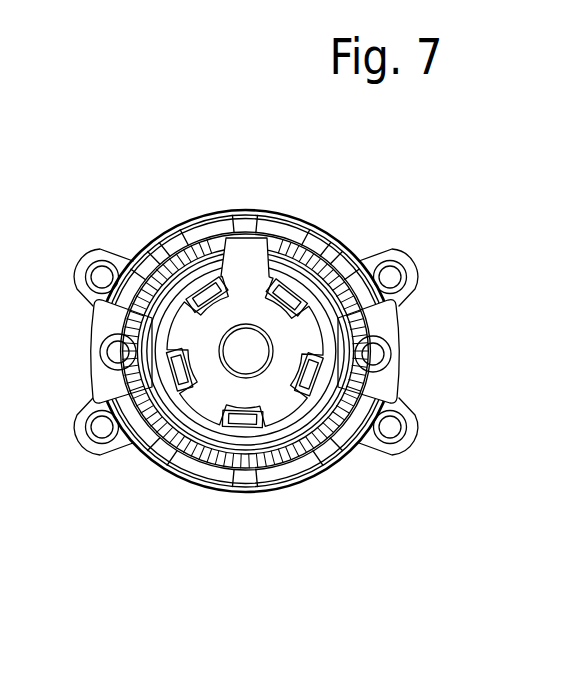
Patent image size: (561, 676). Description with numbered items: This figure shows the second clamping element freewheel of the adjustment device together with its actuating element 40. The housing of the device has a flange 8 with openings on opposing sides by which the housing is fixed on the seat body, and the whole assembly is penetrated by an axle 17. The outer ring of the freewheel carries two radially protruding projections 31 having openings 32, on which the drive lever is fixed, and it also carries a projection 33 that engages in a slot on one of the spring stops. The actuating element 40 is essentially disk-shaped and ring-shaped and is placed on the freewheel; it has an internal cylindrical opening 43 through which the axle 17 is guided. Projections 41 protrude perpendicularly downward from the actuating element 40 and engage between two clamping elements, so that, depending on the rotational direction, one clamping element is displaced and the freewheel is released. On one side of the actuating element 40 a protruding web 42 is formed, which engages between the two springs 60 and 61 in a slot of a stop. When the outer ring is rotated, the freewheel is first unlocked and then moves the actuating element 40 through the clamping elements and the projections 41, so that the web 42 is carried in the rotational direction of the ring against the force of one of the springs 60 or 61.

The flange 8 is at (416, 430).
The axle 17 is at (248, 355).
The projection 31 is at (387, 320).
The opening 32 is at (373, 355).
The projection 33 is at (232, 470).
The actuating element 40 is at (288, 342).
The projection 41 is at (203, 298).
The protruding web 42 is at (247, 250).
The internal cylindrical opening 43 is at (220, 339).
The spring 60 is at (329, 466).
The spring 61 is at (172, 468).